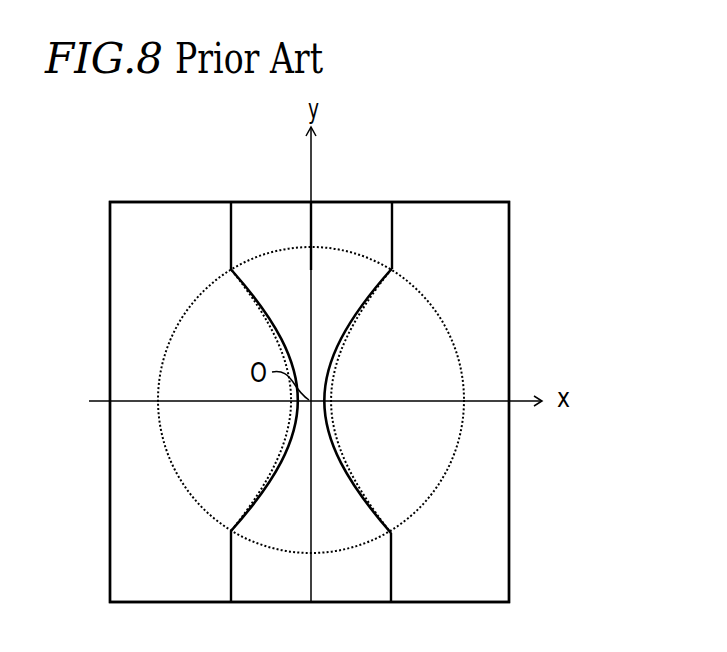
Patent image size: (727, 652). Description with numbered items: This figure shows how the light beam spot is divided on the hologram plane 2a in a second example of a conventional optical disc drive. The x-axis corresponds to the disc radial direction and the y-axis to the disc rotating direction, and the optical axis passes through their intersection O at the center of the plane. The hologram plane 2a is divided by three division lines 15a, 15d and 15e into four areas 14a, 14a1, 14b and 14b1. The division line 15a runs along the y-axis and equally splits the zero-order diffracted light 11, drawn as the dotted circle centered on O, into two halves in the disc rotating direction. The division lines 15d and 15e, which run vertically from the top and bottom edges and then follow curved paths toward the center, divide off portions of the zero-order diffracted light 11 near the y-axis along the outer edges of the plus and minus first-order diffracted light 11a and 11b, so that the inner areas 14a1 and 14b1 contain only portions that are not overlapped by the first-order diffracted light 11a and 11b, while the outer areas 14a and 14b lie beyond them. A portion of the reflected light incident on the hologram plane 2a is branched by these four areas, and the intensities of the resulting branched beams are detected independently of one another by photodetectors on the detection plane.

The hologram plane 2a is at (489, 187).
The zero-order diffracted light 11 is at (283, 540).
The +first-order diffracted light 11a is at (430, 483).
The −first-order diffracted light 11b is at (201, 492).
The area 14a is at (492, 277).
The area 14b is at (122, 320).
The area 14a1 is at (369, 214).
The area 14b1 is at (258, 213).
The division line 15a is at (321, 218).
The division line 15d is at (402, 218).
The division line 15e is at (223, 218).